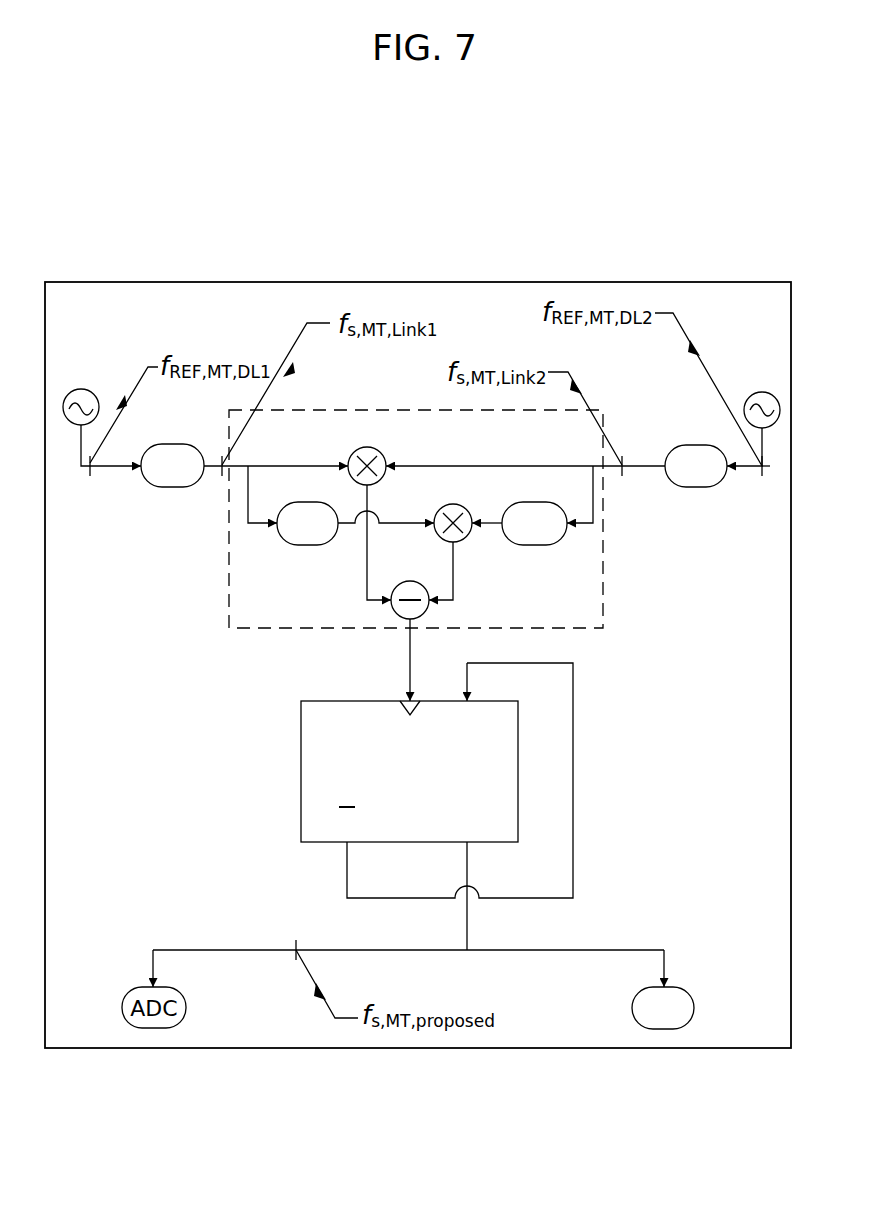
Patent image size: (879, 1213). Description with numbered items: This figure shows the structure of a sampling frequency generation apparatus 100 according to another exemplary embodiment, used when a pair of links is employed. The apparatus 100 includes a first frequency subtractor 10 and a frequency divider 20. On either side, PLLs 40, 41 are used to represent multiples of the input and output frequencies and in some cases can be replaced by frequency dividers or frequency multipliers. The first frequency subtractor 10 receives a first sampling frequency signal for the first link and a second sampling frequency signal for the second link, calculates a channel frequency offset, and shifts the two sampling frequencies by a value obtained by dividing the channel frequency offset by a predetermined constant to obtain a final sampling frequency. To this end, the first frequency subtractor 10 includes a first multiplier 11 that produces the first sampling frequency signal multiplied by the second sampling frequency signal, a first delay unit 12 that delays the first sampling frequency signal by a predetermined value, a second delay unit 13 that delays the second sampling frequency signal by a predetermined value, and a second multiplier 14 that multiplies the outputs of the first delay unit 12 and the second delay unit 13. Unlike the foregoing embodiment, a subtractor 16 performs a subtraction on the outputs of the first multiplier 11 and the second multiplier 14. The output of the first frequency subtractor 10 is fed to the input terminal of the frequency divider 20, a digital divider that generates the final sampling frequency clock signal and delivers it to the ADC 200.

The sampling frequency generation apparatus 100 is at (530, 282).
The first frequency subtractor 10 is at (229, 583).
The first multiplier 11 is at (382, 448).
The first delay unit 12 is at (308, 545).
The second delay unit 13 is at (534, 545).
The second multiplier 14 is at (466, 502).
The subtractor 16 is at (410, 581).
The frequency divider 20 is at (301, 767).
The PLL 40 is at (183, 443).
The PLL 41 is at (698, 444).
The ADC 200 is at (694, 1008).